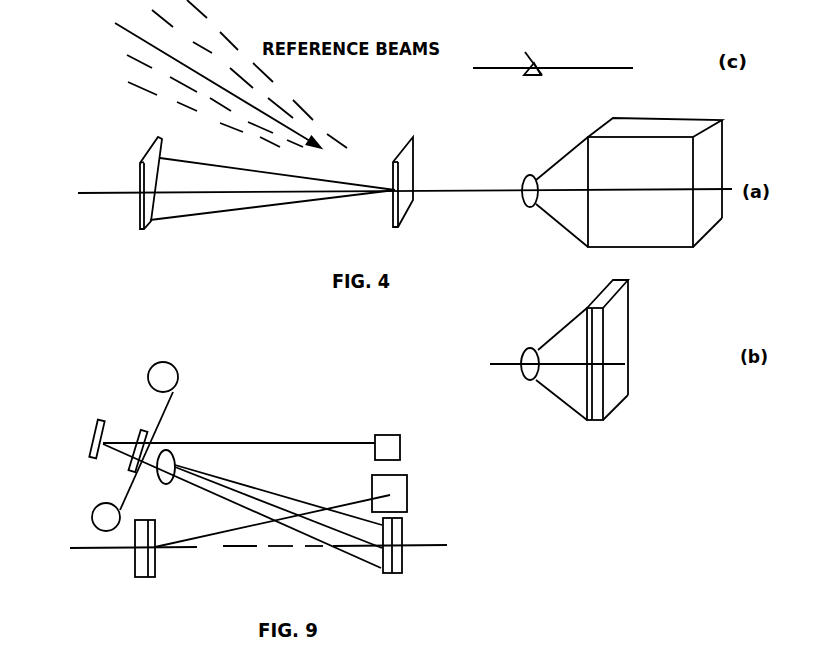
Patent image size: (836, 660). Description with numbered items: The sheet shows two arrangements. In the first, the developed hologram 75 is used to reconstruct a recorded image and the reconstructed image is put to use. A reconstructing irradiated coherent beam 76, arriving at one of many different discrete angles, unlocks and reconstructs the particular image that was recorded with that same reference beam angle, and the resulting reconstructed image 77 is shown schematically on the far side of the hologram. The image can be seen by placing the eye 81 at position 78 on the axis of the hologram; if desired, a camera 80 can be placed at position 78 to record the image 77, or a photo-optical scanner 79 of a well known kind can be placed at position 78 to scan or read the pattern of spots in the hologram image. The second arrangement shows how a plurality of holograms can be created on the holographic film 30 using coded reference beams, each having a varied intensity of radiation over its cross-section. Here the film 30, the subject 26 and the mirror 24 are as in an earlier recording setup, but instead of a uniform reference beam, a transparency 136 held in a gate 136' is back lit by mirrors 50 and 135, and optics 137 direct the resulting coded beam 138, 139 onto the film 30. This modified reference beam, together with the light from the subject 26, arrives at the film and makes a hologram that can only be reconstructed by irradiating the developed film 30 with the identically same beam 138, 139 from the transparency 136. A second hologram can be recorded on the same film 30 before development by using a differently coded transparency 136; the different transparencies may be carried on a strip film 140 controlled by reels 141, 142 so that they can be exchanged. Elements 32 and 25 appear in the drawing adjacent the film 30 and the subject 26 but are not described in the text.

In FIG. 4, the developed hologram 75 is at (415, 150).
In FIG. 4, the reconstructing irradiated coherent beam 76 is at (273, 118).
In FIG. 4, the reconstructed image 77 is at (142, 208).
In FIG. 4, the position on the axis of the hologram 78 is at (523, 178).
In FIG. 4, the photo-optical scanner 79 is at (672, 250).
In FIG. 4, the camera 80 is at (632, 342).
In FIG. 4, the eye 81 is at (517, 82).
In FIG. 9, the reel 141 is at (177, 372).
In FIG. 9, the strip film 140 is at (168, 411).
In FIG. 9, the mirror 135 is at (90, 433).
In FIG. 9, the transparency 136 is at (239, 446).
In FIG. 9, the gate 136' is at (83, 478).
In FIG. 9, the optics 137 is at (176, 462).
In FIG. 9, the beam 138 is at (245, 485).
In FIG. 9, the beam 139 is at (250, 505).
In FIG. 9, the mirror 50 is at (402, 442).
In FIG. 9, the mirror 24 is at (408, 488).
In FIG. 9, the recording medium 32 is at (403, 537).
In FIG. 9, the holographic film 30 is at (382, 521).
In FIG. 9, the reel 142 is at (92, 515).
In FIG. 9, the lens plate 25 is at (137, 562).
In FIG. 9, the subject 26 is at (155, 565).